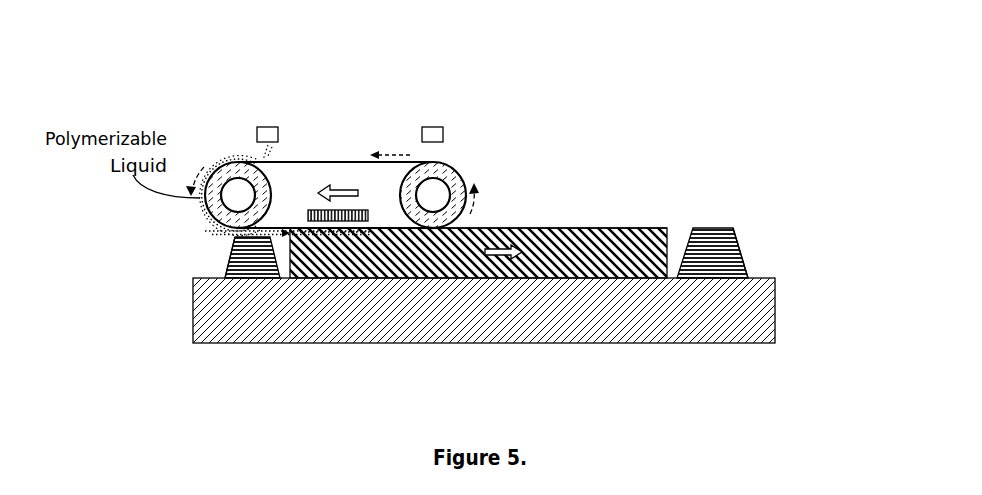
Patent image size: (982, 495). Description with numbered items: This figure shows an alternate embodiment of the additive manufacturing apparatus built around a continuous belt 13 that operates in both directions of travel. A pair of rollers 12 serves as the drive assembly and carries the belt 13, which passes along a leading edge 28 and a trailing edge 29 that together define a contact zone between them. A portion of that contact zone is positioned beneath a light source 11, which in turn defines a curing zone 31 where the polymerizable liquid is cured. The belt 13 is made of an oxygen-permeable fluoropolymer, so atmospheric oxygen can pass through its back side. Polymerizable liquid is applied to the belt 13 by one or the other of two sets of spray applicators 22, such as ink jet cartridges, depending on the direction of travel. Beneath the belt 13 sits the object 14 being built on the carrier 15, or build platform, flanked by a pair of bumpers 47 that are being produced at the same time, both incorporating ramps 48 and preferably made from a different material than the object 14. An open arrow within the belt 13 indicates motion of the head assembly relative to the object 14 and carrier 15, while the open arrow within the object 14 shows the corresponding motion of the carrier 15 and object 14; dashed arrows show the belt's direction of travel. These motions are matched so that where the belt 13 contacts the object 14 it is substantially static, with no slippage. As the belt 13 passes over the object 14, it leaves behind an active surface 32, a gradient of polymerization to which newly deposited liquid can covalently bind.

The light source 11 is at (340, 210).
The rollers 12 is at (458, 165).
The continuous belt 13 is at (466, 182).
The object 14 is at (560, 240).
The carrier 15 is at (640, 343).
The spray applicators 22 is at (437, 135).
The leading edge 28 is at (240, 228).
The trailing edge 29 is at (433, 228).
The curing zone 31 is at (342, 224).
The active surface 32 is at (625, 228).
The bumpers 47 is at (240, 252).
The ramps 48 is at (225, 263).